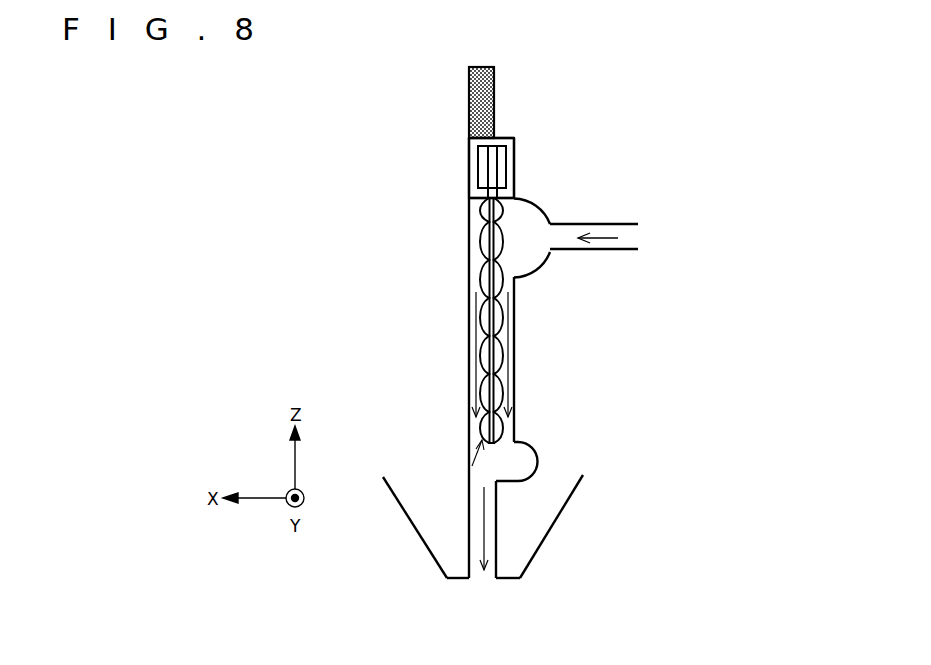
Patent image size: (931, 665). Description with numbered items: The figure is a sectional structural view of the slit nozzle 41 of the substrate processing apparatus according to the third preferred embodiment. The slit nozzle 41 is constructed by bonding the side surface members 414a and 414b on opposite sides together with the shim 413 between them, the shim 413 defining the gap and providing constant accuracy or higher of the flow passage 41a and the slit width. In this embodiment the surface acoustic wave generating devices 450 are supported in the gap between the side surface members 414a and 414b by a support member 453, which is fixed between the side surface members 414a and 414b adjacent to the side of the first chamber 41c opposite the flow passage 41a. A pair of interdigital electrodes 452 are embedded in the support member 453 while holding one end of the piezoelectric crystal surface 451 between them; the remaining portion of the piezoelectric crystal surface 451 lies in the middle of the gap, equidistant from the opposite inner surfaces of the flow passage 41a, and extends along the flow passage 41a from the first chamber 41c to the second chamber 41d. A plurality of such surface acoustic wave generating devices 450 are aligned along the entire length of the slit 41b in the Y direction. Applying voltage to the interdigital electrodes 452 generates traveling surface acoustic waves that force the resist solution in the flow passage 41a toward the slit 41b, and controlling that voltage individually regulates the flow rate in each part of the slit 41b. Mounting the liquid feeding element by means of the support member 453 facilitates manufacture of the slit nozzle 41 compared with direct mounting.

The slit nozzle 41 is at (278, 105).
The shim 413 is at (471, 112).
The surface acoustic wave generating device 450 is at (373, 155).
The piezoelectric crystal surface 451 is at (493, 247).
The interdigital electrodes 452 is at (483, 147).
The support member 453 is at (513, 168).
The flow passage 41a is at (469, 468).
The slit 41b is at (487, 580).
The first chamber 41c is at (533, 213).
The second chamber 41d is at (522, 462).
The side surface member 414a is at (442, 552).
The side surface member 414b is at (527, 552).